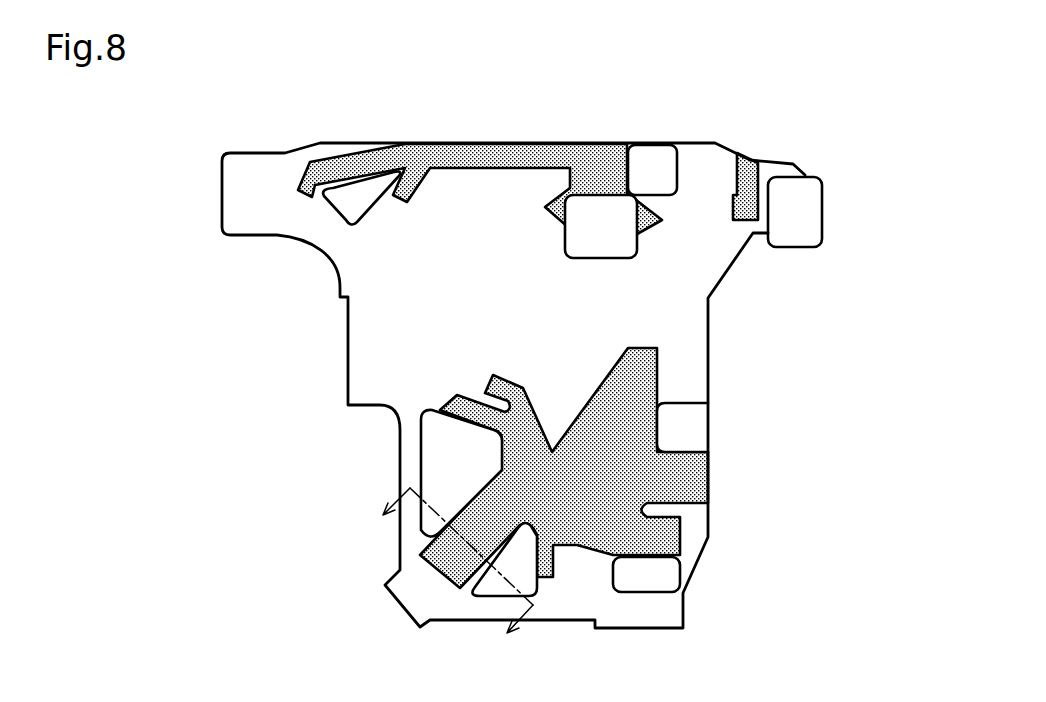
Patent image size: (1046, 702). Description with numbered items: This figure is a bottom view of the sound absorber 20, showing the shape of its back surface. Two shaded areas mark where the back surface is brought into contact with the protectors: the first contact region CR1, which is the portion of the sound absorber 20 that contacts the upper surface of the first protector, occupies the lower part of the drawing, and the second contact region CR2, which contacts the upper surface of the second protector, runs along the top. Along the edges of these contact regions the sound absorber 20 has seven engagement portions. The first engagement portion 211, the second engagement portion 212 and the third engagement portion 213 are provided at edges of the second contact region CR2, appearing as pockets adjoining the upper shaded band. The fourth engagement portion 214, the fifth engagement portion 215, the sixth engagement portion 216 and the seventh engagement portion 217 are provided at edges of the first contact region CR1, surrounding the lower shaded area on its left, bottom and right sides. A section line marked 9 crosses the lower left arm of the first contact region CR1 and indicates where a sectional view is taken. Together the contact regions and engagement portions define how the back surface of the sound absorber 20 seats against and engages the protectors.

The sound absorber 20 is at (348, 347).
The first engagement portion 211 is at (328, 208).
The second engagement portion 212 is at (667, 196).
The third engagement portion 213 is at (822, 222).
The fourth engagement portion 214 is at (421, 455).
The fifth engagement portion 215 is at (540, 583).
The sixth engagement portion 216 is at (650, 592).
The seventh engagement portion 217 is at (708, 427).
The first contact region CR1 is at (695, 480).
The second contact region CR2 is at (748, 160).
The section line IX-IX 9 is at (448, 576).